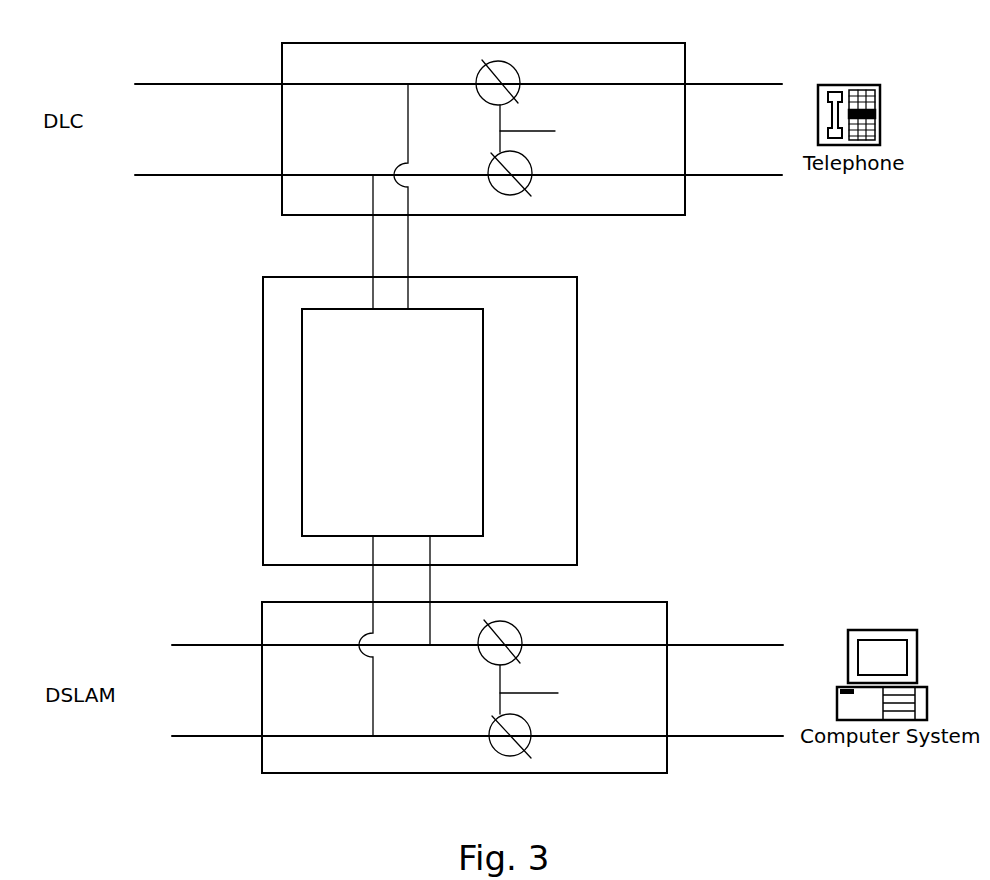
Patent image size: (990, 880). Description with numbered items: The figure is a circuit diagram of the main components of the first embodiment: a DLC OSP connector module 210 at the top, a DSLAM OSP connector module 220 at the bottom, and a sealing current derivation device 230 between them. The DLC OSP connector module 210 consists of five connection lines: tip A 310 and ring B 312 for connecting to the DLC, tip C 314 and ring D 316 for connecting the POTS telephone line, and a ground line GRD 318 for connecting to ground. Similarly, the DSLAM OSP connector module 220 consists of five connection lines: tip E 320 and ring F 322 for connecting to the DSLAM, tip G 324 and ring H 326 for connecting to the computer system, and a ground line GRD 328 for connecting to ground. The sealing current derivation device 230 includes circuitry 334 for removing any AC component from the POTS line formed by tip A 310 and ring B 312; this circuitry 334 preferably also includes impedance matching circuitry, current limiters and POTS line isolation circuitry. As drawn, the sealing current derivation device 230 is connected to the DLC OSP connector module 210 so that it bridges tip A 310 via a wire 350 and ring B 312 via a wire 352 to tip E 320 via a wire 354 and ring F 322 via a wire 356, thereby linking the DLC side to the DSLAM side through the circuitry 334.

The DLC OSP connector module 210 is at (570, 43).
The tip A 310 is at (311, 90).
The ring B 312 is at (292, 182).
The tip C 314 is at (606, 83).
The ring D 316 is at (606, 170).
The GRD 318 is at (613, 129).
The wire 350 is at (410, 256).
The wire 352 is at (367, 243).
The sealing current derivation device 230 is at (558, 333).
The circuitry 334 is at (484, 399).
The wire 354 is at (431, 590).
The wire 356 is at (370, 690).
The DSLAM OSP connector module 220 is at (585, 602).
The tip E 320 is at (232, 655).
The ring F 322 is at (279, 750).
The tip G 324 is at (595, 653).
The ring H 326 is at (590, 735).
The GRD 328 is at (607, 682).